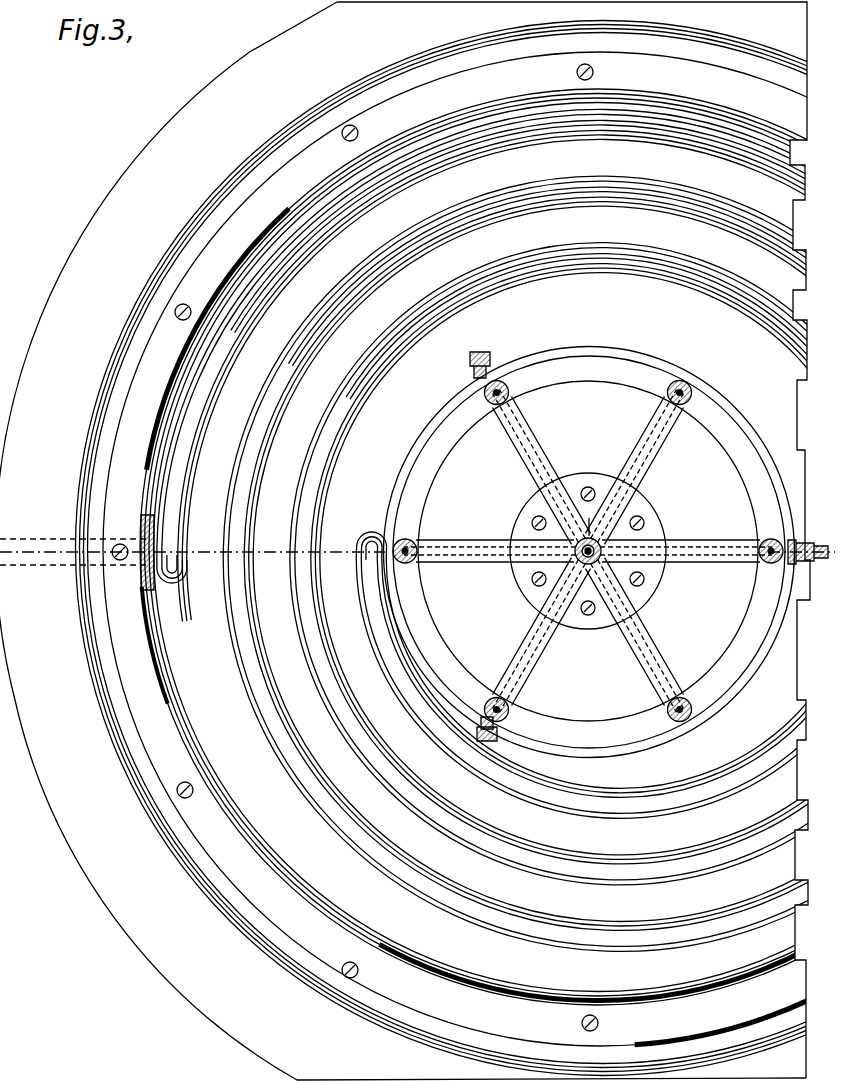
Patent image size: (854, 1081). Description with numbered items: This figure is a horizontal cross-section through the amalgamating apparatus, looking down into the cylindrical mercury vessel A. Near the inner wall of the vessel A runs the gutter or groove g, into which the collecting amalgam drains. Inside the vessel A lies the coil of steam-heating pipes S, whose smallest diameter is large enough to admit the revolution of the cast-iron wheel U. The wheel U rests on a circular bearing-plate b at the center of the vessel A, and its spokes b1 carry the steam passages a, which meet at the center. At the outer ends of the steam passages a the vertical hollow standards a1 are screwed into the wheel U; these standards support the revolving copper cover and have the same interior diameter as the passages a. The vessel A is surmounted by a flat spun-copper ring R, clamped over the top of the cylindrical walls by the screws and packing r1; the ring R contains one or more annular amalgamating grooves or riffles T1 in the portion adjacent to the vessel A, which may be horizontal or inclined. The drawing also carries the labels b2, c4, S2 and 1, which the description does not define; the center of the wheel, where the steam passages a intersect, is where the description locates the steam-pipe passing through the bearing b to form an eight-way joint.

The flat ring R is at (454, 548).
The screws and packing r1 is at (120, 544).
The annular amalgamating grooves or riffles T1 is at (270, 926).
The gutter or groove g is at (172, 676).
The cylindrical vessel A is at (487, 554).
The coil of steam-heating pipes S is at (308, 630).
The wheel U is at (606, 552).
The steam passages a is at (530, 453).
The vertical hollow standards a1 is at (772, 532).
The circular bearing-plate b is at (589, 484).
The spokes b1 is at (470, 547).
The spoke conductor b2 is at (650, 440).
The hub connection c4 is at (593, 517).
The shaft S2 is at (594, 560).
The section line 1 is at (810, 576).